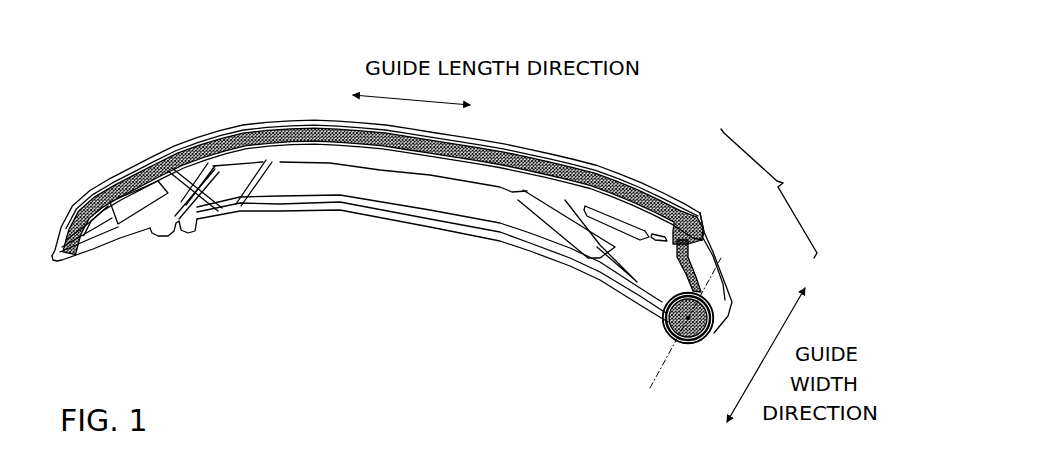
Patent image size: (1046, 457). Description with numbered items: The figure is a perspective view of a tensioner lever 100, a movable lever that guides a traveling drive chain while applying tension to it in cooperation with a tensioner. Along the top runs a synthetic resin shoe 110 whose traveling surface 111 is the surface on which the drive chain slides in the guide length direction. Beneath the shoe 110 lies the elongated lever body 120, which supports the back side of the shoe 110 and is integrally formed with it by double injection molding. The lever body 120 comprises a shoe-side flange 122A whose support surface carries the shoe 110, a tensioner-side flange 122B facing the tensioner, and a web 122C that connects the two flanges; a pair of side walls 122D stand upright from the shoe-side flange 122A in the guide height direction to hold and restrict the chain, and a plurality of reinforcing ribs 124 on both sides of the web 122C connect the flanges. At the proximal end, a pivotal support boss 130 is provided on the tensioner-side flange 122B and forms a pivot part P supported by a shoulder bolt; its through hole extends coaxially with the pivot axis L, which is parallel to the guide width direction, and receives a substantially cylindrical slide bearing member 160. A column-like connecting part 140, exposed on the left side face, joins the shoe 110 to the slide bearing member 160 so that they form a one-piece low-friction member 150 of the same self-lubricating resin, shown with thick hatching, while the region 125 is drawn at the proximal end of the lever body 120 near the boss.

The tensioner lever 100 is at (797, 87).
The shoe 110 is at (680, 200).
The traveling surface 111 is at (608, 176).
The lever body 120 is at (332, 226).
The shoe-side flange 122A is at (303, 160).
The tensioner-side flange 122B is at (247, 218).
The web 122C is at (473, 203).
The side walls 122D is at (174, 134).
The reinforcing ribs 124 is at (560, 233).
The mounting portion 125 is at (717, 296).
The pivotal support boss 130 is at (667, 332).
The connecting part 140 is at (696, 270).
The low-friction member 150 is at (773, 193).
The slide bearing member 160 is at (710, 306).
The pivot axis L is at (679, 331).
The pivot part P is at (691, 344).